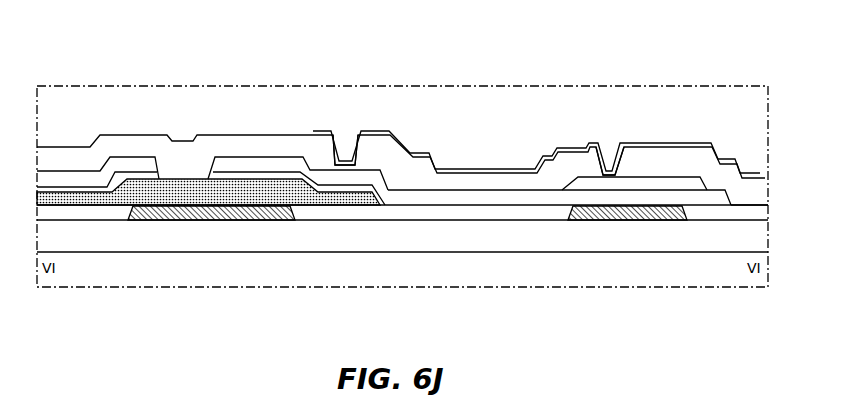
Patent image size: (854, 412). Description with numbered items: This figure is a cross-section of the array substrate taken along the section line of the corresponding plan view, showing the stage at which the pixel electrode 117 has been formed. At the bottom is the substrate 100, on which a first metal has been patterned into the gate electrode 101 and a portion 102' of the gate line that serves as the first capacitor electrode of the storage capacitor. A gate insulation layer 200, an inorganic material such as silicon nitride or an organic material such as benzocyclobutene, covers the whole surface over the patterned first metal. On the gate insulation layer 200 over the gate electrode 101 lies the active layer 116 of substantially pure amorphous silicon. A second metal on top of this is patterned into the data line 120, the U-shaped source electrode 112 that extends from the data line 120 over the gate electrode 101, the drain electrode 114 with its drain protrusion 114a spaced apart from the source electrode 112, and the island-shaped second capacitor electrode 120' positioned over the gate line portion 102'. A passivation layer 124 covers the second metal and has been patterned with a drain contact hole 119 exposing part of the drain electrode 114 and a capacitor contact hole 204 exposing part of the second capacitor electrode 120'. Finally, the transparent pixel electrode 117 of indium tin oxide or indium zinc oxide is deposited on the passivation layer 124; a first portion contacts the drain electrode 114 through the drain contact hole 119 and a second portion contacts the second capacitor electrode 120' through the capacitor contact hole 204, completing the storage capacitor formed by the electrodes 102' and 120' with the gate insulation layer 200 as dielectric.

The substrate 100 is at (428, 245).
The gate electrode 101 is at (232, 221).
The portion of the gate line 102' is at (627, 264).
The source electrode 112 is at (121, 160).
The drain electrode 114 is at (408, 197).
The drain protrusion 114a is at (300, 155).
The active layer 116 is at (197, 178).
The pixel electrode 117 is at (475, 166).
The drain contact hole 119 is at (346, 146).
The data line 120 is at (98, 141).
The second capacitor electrode 120' is at (634, 123).
The passivation layer 124 is at (160, 128).
The gate insulation layer 200 is at (752, 204).
The capacitor contact hole 204 is at (609, 156).